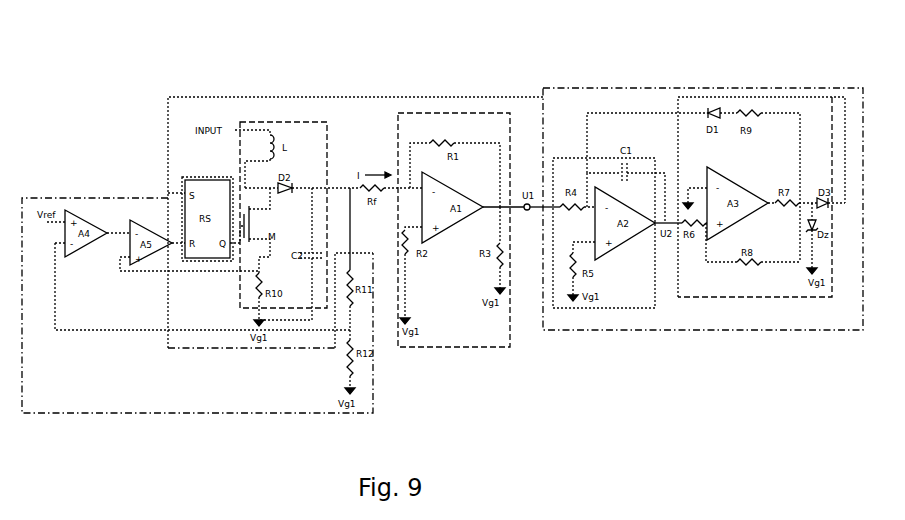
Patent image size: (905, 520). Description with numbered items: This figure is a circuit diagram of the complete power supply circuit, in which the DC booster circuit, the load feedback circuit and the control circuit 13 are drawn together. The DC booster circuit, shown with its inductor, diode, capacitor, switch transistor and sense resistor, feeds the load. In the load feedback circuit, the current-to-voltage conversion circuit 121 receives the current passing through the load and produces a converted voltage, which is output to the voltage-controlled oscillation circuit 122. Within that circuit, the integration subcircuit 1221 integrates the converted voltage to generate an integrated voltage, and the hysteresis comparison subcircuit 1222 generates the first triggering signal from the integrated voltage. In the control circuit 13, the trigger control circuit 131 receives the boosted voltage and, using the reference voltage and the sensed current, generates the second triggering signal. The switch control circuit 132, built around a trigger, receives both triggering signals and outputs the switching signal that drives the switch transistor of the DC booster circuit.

The control circuit 13 is at (322, 135).
The trigger control circuit 131 is at (167, 398).
The switch control circuit 132 is at (188, 172).
The current-to-voltage conversion circuit 121 is at (478, 335).
The voltage-controlled oscillation circuit 122 is at (722, 325).
The integration subcircuit 1221 is at (628, 300).
The hysteresis comparison subcircuit 1222 is at (788, 292).